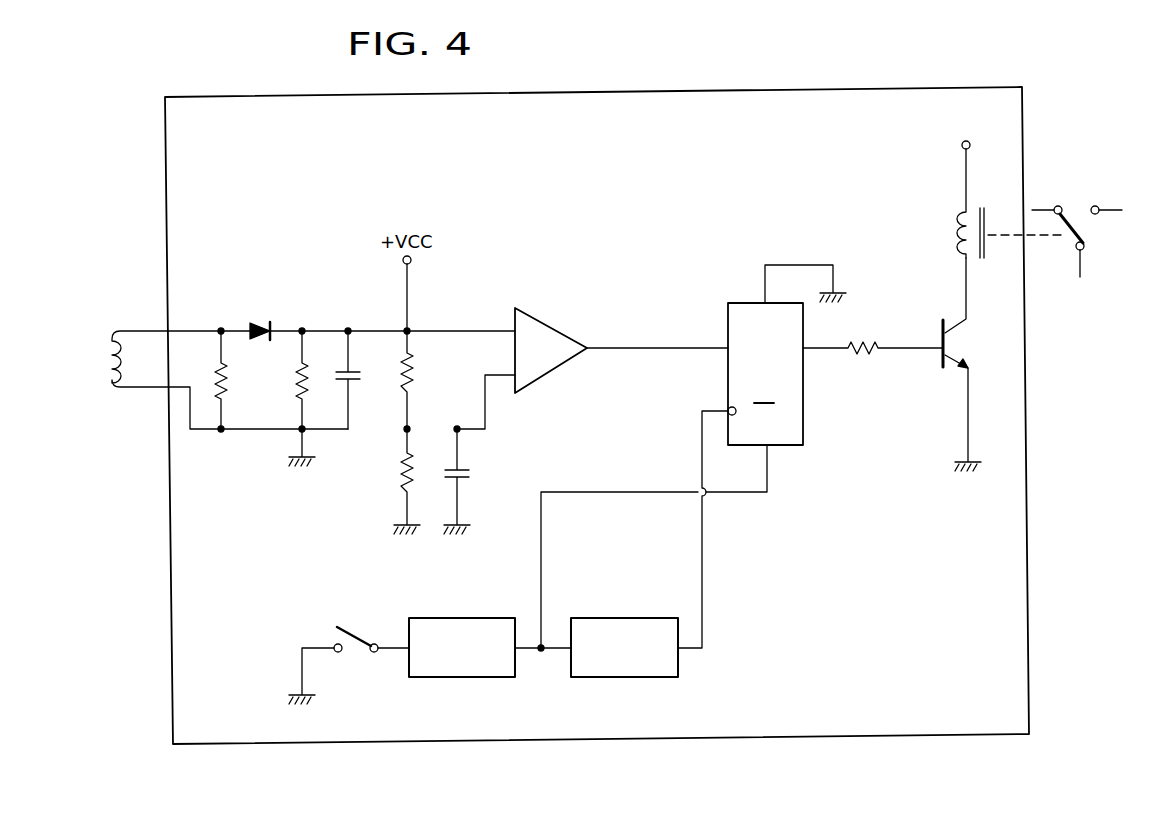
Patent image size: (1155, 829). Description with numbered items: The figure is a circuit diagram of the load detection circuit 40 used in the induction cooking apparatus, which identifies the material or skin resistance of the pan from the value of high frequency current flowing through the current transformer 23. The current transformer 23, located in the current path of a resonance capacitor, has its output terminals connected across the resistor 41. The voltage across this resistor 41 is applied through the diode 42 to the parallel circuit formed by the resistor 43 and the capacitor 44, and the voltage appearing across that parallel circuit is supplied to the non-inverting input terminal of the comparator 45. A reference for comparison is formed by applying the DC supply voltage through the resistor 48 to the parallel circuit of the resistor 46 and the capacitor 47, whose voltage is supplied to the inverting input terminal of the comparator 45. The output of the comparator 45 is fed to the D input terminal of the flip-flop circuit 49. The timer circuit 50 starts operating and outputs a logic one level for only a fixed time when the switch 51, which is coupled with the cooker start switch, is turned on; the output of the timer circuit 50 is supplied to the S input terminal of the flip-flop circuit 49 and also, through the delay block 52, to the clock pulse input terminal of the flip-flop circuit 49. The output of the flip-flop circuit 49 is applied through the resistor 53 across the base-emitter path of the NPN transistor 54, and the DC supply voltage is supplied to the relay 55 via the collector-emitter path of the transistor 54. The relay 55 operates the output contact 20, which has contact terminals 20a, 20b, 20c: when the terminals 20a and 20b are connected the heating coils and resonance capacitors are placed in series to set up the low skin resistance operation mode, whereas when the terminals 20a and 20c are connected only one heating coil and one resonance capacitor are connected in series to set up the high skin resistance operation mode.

The output contact 20 is at (1085, 221).
The contact terminal 20a is at (1058, 205).
The contact terminal 20b is at (1096, 205).
The output contact terminal 20c is at (1084, 250).
The current transformer 23 is at (104, 361).
The load detection circuit 40 is at (828, 87).
The resistor 41 is at (228, 388).
The diode 42 is at (260, 322).
The resistor 43 is at (306, 360).
The capacitor 44 is at (353, 384).
The comparator 45 is at (538, 320).
The resistor 46 is at (400, 474).
The capacitor 47 is at (471, 475).
The resistor 48 is at (415, 378).
The flip-flop circuit 49 is at (738, 303).
The timer circuit 50 is at (456, 618).
The switch 51 is at (352, 625).
The delay circuit 52 is at (622, 618).
The resistor 53 is at (862, 356).
The NPN transistor 54 is at (950, 318).
The relay 55 is at (956, 228).